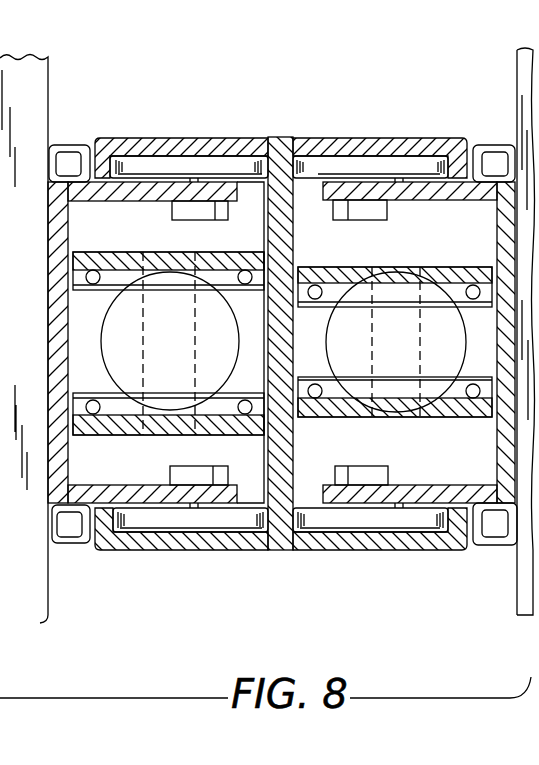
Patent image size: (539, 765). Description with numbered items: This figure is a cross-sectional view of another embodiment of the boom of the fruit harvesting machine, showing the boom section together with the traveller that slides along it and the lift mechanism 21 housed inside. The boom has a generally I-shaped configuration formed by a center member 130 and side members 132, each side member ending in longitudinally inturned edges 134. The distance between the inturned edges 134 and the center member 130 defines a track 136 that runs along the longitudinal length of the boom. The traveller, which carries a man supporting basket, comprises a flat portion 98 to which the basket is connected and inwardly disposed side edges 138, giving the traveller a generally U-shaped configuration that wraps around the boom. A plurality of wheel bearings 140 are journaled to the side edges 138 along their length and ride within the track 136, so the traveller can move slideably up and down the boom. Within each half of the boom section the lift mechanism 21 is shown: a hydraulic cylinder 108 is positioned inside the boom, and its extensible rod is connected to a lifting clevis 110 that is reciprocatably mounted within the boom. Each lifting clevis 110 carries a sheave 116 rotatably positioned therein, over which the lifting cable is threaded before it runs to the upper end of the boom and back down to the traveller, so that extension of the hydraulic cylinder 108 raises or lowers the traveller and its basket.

The lift mechanism 21 is at (398, 216).
The flat portion 98 is at (58, 228).
The hydraulic cylinder 108 is at (138, 341).
The lifting clevis 110 is at (243, 232).
The sheave 116 is at (195, 358).
The center member 130 is at (333, 244).
The side member 132 is at (320, 155).
The inturned edge 134 is at (95, 142).
The track 136 is at (140, 156).
The side edge 138 is at (152, 193).
The wheel bearing 140 is at (175, 167).